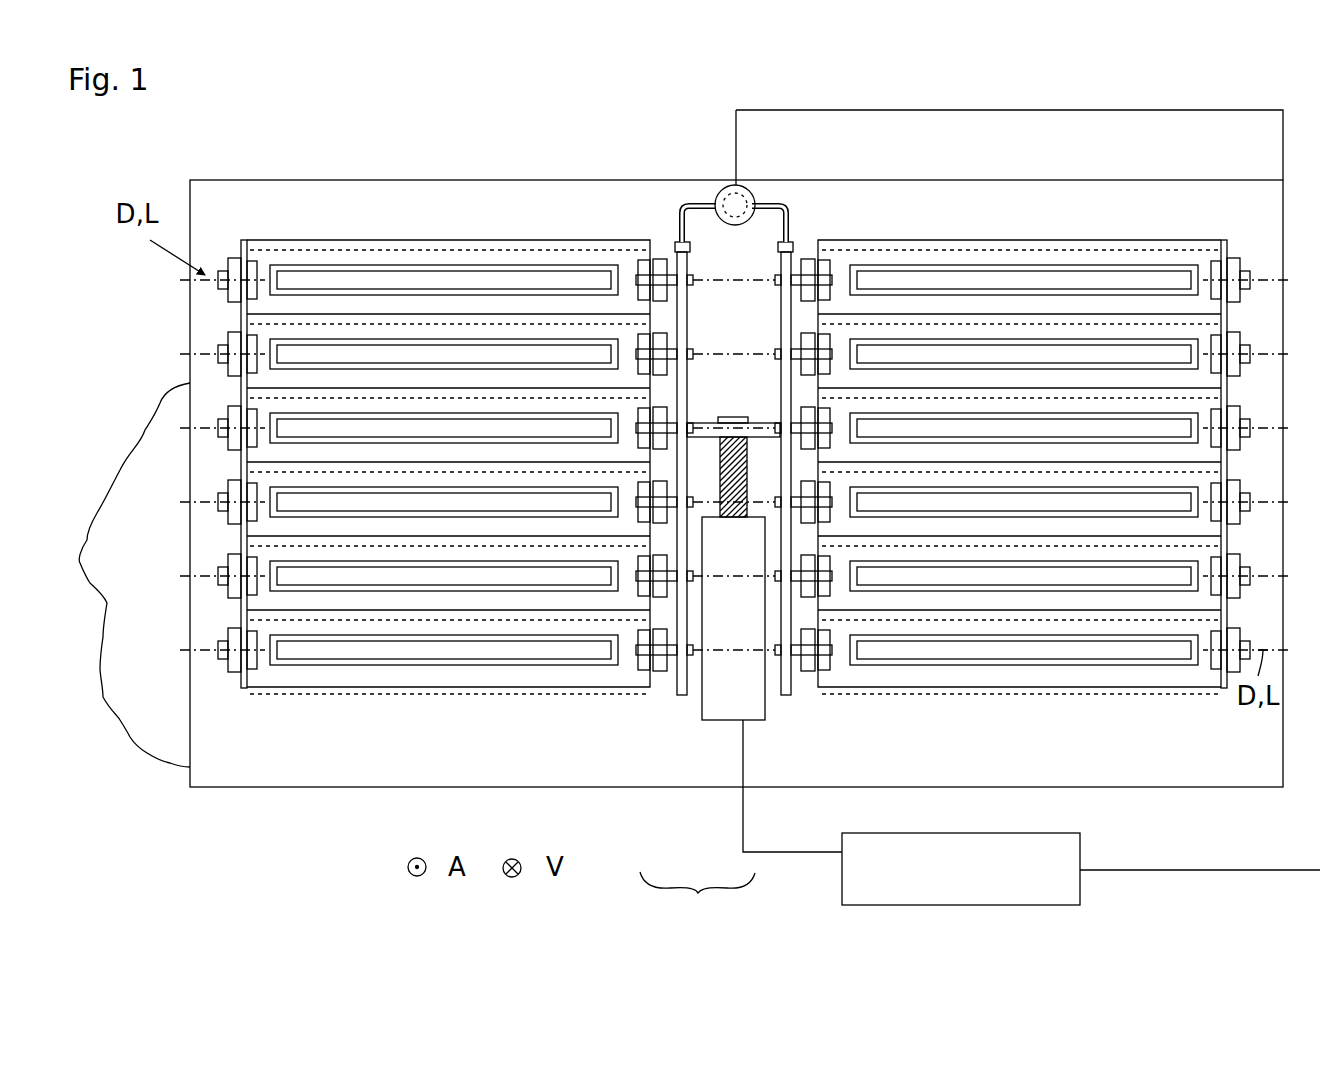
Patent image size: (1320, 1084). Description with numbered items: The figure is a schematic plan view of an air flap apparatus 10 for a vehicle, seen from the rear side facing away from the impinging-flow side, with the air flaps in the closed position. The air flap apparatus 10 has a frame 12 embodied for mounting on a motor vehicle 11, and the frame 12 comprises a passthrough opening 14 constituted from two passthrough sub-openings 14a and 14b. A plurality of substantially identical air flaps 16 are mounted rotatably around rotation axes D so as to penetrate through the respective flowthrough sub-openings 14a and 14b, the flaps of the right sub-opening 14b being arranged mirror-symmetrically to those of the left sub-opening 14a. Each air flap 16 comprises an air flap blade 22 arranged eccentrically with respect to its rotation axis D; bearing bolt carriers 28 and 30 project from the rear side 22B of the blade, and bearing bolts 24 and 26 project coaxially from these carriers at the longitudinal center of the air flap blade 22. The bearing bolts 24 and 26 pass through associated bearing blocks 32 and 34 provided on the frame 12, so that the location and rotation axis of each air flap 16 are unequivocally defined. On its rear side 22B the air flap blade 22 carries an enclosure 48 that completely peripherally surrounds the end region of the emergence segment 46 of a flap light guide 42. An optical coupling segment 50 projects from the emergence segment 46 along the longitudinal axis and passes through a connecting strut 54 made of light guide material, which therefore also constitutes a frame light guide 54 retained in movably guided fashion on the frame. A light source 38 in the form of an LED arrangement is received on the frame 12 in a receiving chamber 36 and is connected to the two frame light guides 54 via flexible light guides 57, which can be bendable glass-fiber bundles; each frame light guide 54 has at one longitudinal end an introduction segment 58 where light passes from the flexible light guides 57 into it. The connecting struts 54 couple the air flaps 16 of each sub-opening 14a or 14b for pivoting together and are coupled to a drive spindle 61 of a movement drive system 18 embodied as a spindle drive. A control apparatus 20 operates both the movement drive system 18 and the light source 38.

The air flap apparatus 10 is at (213, 840).
The motor vehicle 11 is at (143, 462).
The frame 12 is at (1230, 770).
The passthrough opening 14 is at (697, 901).
The passthrough sub-opening 14a is at (627, 714).
The passthrough sub-opening 14b is at (846, 709).
The air flap 16 is at (370, 255).
The movement drive system 18 is at (727, 626).
The control apparatus 20 is at (947, 884).
The air flap blade 22 is at (468, 260).
The rear side 22B is at (462, 675).
The bearing bolt 24 is at (222, 273).
The bearing bolt 26 is at (777, 317).
The bearing bolt carrier 28 is at (251, 262).
The bearing bolt carrier 30 is at (640, 263).
The bearing block 32 is at (232, 260).
The bearing block 34 is at (658, 262).
The receiving chamber 36 is at (740, 184).
The light source 38 is at (722, 190).
The flap light guide 42 is at (525, 262).
The emergence segment 46 is at (305, 275).
The enclosure 48 is at (420, 275).
The optical coupling segment 50 is at (773, 287).
The connecting strut 54 is at (778, 378).
The flexible light guide 57 is at (732, 228).
The introduction segment 58 is at (680, 243).
The drive spindle 61 is at (741, 470).